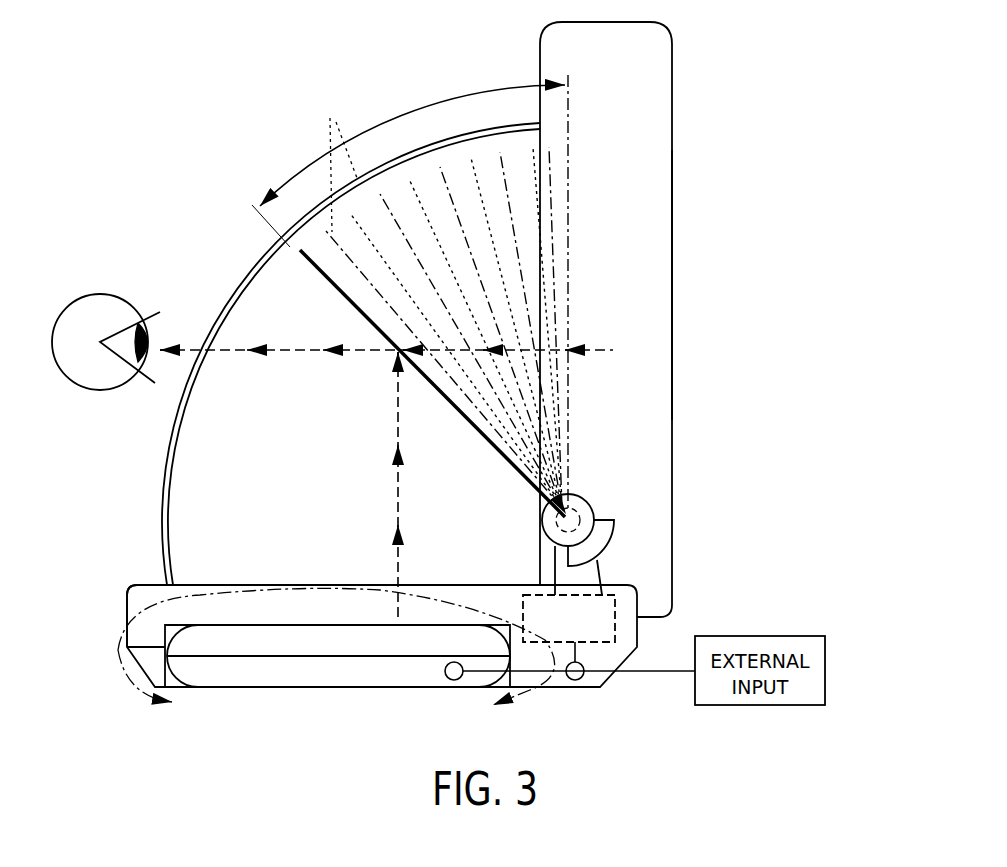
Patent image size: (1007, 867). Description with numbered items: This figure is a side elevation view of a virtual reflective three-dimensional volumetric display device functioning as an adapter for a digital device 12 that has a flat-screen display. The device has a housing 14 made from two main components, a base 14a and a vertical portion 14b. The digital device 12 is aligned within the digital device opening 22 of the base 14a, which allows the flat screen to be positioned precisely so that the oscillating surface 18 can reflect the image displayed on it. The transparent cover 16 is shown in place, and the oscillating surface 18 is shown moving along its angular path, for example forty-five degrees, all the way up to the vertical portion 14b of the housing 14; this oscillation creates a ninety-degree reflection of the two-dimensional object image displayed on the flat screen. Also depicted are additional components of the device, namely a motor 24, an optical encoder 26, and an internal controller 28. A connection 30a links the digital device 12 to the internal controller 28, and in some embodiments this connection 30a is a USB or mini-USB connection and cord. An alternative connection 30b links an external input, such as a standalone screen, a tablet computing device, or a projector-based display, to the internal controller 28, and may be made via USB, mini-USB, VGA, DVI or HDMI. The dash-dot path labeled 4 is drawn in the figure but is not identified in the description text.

The section line / light path 4 is at (336, 661).
The digital device 12 is at (336, 687).
The housing 14 is at (684, 101).
The base 14a is at (127, 598).
The vertical portion 14b is at (672, 162).
The transparent cover 16 is at (282, 250).
The oscillating surface 18 is at (300, 250).
The digital device opening 22 is at (170, 683).
The motor 24 is at (594, 505).
The optical encoder 26 is at (605, 557).
The internal controller 28 is at (618, 630).
The connection 30a is at (482, 671).
The alternative connection 30b is at (652, 672).